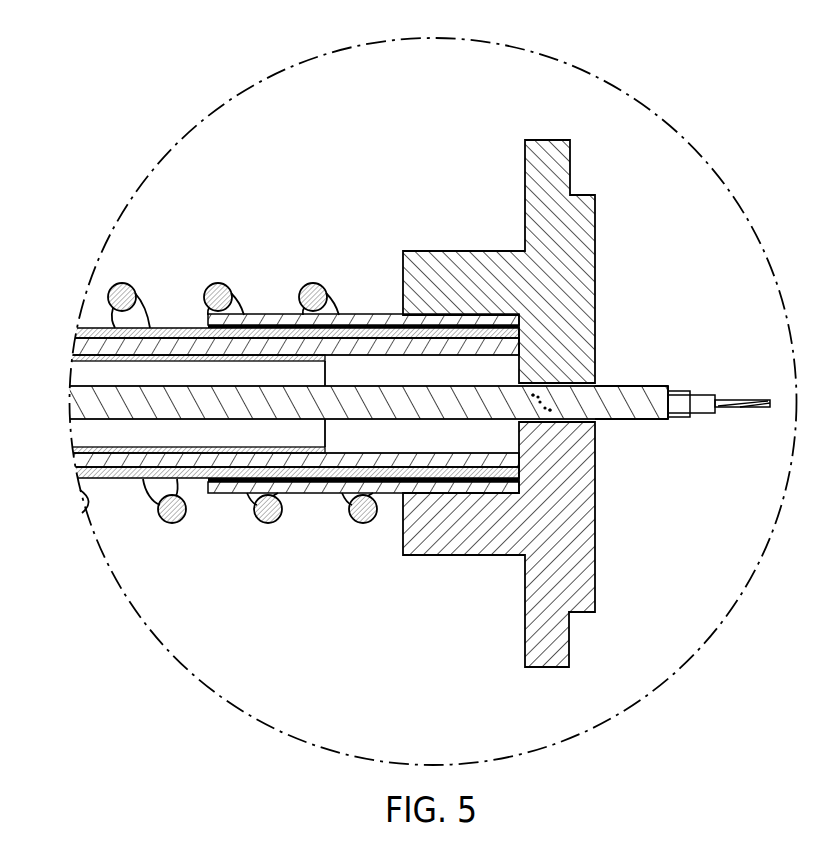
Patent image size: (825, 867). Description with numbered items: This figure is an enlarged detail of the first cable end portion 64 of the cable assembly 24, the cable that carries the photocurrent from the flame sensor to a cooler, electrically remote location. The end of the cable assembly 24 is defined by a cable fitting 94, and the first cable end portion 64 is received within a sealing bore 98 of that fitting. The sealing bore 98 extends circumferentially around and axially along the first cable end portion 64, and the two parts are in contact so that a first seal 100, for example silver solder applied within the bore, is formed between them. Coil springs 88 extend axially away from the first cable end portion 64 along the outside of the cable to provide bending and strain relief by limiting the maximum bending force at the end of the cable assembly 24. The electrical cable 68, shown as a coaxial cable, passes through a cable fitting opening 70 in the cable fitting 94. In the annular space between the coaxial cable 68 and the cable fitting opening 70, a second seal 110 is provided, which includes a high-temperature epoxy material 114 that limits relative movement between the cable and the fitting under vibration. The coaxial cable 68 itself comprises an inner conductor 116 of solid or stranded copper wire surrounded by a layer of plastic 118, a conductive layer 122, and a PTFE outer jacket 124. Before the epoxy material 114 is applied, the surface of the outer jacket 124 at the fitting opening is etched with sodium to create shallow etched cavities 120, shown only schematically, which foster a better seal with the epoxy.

The cable assembly 24 is at (114, 126).
The first cable end portion 64 is at (428, 320).
The electrical cable 68 is at (638, 387).
The cable fitting opening 70 is at (588, 406).
The coil springs 88 is at (172, 523).
The cable fitting 94 is at (525, 633).
The sealing bore 98 is at (493, 472).
The first seal 100 is at (210, 327).
The second seal 110 is at (600, 387).
The epoxy material 114 is at (566, 410).
The inner conductor 116 is at (758, 400).
The layer of plastic 118 is at (712, 394).
The etched cavities 120 is at (548, 394).
The conductive layer 122 is at (688, 416).
The outer jacket 124 is at (657, 419).